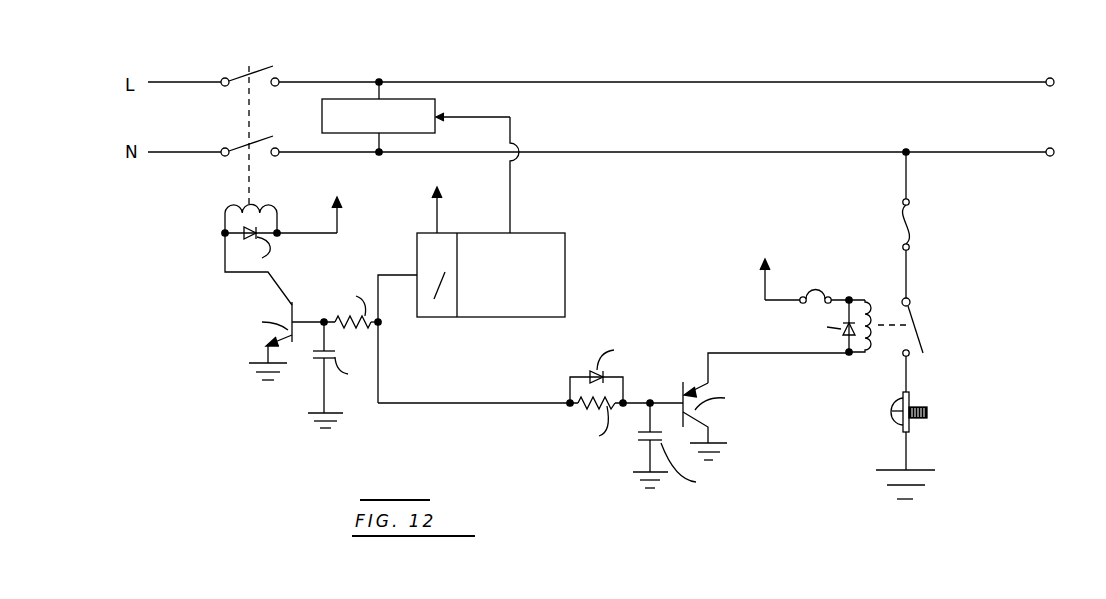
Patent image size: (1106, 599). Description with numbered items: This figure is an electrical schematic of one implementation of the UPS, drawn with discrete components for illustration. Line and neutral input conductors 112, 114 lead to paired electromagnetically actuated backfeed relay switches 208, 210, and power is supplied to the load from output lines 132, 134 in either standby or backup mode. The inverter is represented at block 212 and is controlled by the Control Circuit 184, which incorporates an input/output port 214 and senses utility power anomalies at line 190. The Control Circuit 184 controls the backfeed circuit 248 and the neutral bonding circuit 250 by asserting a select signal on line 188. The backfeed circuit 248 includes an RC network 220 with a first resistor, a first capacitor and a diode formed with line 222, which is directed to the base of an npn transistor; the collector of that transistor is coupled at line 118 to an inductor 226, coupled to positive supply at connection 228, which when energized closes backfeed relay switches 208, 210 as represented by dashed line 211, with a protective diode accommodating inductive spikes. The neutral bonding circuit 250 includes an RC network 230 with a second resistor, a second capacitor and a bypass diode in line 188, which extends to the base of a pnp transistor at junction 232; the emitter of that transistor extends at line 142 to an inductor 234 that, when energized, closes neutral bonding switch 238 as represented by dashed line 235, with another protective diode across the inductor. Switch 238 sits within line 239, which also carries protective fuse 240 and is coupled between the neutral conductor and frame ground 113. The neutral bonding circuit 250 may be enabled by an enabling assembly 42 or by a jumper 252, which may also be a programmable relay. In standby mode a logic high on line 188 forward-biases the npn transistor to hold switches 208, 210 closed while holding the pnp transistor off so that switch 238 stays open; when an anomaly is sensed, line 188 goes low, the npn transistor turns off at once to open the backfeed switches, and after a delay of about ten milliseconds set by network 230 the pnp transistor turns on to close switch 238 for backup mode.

The line input conductor 112 is at (182, 82).
The neutral input conductor 114 is at (190, 152).
The backfeed relay switch 208 is at (258, 72).
The backfeed relay switch 210 is at (247, 142).
The dashed line 211 is at (252, 187).
The output line 132 is at (973, 82).
The output line 134 is at (980, 152).
The inverter 212 is at (436, 101).
The Control Circuit 184 is at (503, 255).
The input/output port 214 is at (448, 232).
The line 190 is at (432, 202).
The line 188 is at (403, 270).
The Vcc supply connection 228 is at (339, 208).
The backfeed circuit 248 is at (224, 220).
The inductor 226 is at (240, 206).
The line 118 is at (245, 275).
The line 222 is at (300, 327).
The RC network 220 is at (347, 264).
The RC network 230 is at (564, 417).
The transistor Q2 232 is at (662, 402).
The line 142 is at (786, 352).
The neutral bonding circuit 250 is at (783, 293).
The jumper 252 is at (816, 290).
The inductor 234 is at (872, 347).
The dashed line 235 is at (895, 323).
The line 239 is at (906, 178).
The protective fuse 240 is at (910, 222).
The neutral bonding switch 238 is at (912, 303).
The enabling assembly 42 is at (917, 406).
The frame ground 113 is at (925, 470).